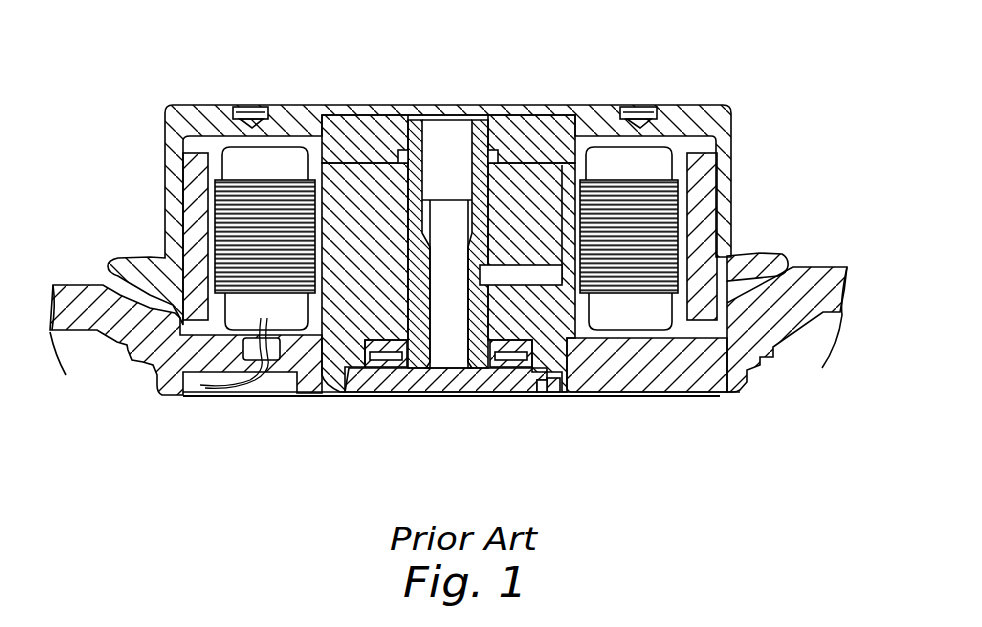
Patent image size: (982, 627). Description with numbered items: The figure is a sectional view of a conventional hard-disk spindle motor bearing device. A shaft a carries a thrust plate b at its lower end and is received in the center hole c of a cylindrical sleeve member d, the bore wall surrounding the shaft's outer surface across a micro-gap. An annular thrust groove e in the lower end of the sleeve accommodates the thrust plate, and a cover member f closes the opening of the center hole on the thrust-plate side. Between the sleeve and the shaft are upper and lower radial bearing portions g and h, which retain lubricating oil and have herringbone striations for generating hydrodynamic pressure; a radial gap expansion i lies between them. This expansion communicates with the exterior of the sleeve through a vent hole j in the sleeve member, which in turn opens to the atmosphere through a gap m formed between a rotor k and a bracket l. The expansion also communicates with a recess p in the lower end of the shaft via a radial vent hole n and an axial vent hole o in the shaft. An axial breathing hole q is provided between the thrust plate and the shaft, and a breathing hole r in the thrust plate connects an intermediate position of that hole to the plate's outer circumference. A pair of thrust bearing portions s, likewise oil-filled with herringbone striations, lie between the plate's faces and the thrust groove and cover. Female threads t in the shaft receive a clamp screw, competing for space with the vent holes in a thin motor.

The shaft a is at (400, 177).
The thrust plate b is at (585, 378).
The center hole c is at (357, 185).
The sleeve member d is at (500, 215).
The thrust groove e is at (520, 380).
The cover member f is at (512, 385).
The upper radial bearing portion g is at (486, 152).
The lower radial bearing portion h is at (618, 378).
The radial gap expansion i is at (560, 230).
The vent hole j is at (575, 230).
The rotor k is at (731, 168).
The bracket l is at (816, 268).
The gap m is at (772, 256).
The radial vent hole n is at (478, 372).
The axial vent hole o is at (415, 372).
The recess p is at (447, 368).
The axial breathing hole q is at (390, 367).
The breathing hole r is at (373, 396).
The thrust bearing portions s is at (300, 396).
The female threads t is at (443, 140).